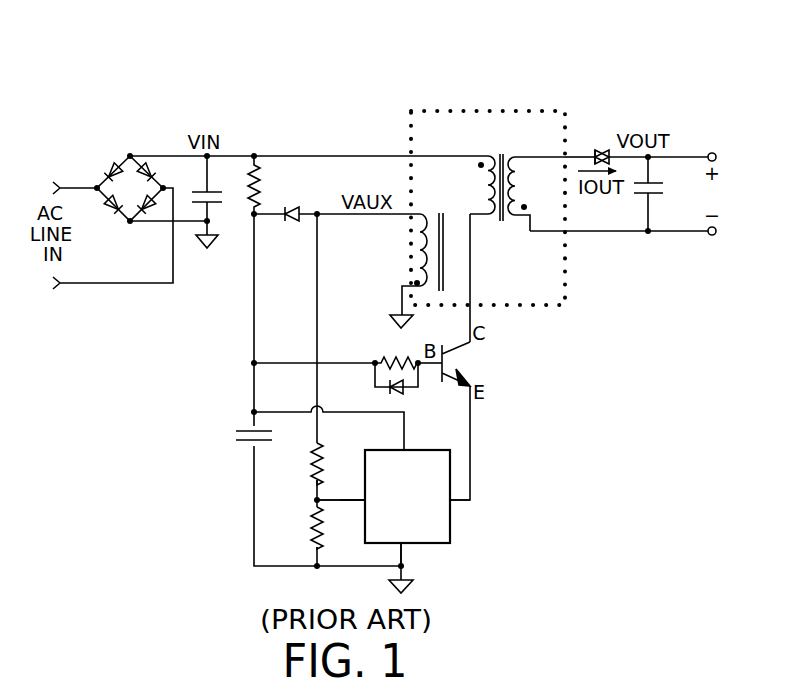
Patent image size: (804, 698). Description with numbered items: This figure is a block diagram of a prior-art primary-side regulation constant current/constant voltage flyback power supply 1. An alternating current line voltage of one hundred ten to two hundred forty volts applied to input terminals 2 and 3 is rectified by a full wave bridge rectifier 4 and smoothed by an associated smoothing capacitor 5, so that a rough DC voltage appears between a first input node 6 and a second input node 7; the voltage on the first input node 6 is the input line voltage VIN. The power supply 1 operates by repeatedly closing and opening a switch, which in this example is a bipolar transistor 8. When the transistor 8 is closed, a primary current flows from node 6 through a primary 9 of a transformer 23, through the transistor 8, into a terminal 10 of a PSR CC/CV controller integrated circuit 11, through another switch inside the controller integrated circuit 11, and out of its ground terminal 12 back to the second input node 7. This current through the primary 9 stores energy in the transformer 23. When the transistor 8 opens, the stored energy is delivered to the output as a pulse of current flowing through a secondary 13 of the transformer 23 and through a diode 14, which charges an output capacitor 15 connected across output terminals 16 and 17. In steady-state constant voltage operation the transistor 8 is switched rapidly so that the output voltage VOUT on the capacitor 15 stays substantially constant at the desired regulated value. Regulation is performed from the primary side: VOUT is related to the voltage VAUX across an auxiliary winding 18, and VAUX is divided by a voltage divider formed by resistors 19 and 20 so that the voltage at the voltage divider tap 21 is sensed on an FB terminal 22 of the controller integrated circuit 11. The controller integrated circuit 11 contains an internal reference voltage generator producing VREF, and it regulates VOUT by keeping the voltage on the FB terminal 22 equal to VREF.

The flyback power supply 1 is at (484, 56).
The input terminal 2 is at (79, 186).
The input terminal 3 is at (79, 286).
The full wave bridge rectifier 4 is at (124, 200).
The smoothing capacitor 5 is at (213, 193).
The first input node 6 is at (233, 152).
The second input node 7 is at (212, 229).
The bipolar transistor 8 is at (454, 360).
The primary 9 is at (478, 178).
The terminal 10 is at (469, 502).
The PSR CC/CV controller integrated circuit 11 is at (434, 450).
The ground terminal 12 is at (403, 545).
The secondary 13 is at (520, 181).
The diode 14 is at (605, 152).
The output capacitor 15 is at (655, 195).
The output terminal 16 is at (708, 153).
The output terminal 17 is at (708, 236).
The auxiliary winding 18 is at (415, 259).
The resistor 19 is at (307, 462).
The resistor 20 is at (307, 528).
The voltage divider tap 21 is at (307, 500).
The FB terminal 22 is at (350, 494).
The transformer 23 is at (444, 110).